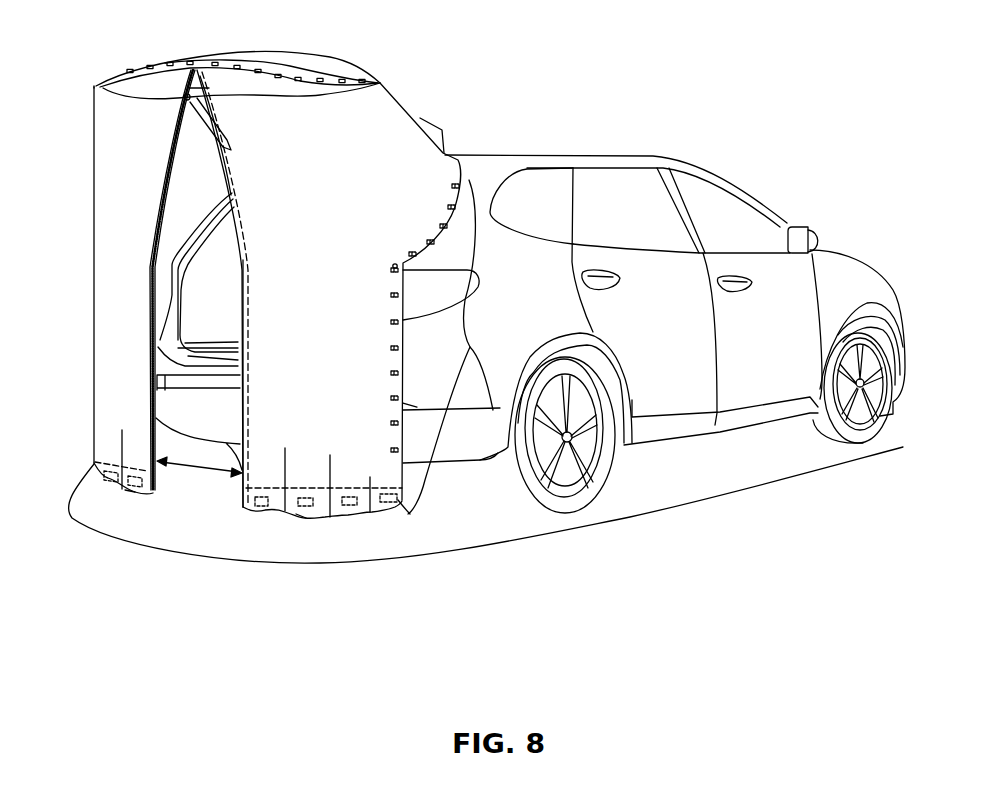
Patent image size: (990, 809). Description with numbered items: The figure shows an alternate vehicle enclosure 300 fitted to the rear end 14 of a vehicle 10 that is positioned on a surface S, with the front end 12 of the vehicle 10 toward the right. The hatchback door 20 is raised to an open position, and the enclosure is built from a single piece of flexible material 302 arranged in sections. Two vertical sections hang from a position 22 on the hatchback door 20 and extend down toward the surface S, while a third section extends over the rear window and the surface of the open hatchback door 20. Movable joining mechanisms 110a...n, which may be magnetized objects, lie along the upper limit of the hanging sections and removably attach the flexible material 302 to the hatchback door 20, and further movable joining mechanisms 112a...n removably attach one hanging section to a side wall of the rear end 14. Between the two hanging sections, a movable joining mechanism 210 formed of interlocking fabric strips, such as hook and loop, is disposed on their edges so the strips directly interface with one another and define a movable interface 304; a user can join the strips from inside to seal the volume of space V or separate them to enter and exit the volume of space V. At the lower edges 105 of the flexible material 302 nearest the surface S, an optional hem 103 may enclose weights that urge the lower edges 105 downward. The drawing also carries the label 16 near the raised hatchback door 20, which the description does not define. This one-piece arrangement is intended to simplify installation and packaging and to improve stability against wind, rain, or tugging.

The vehicle 10 is at (730, 143).
The front end 12 is at (794, 203).
The rear end 14 is at (480, 144).
The tailgate 16 is at (188, 154).
The hatchback door 20 is at (405, 101).
The position on the hatchback door 22 is at (176, 60).
The volume of space V is at (168, 299).
The surface S is at (222, 541).
The hem 103 is at (70, 484).
The lower edges 105 is at (130, 495).
The movable joining mechanisms 110a...n is at (194, 97).
The movable joining mechanisms 112a...n is at (476, 362).
The movable joining mechanism 210 is at (209, 288).
The vehicle enclosure 300 is at (114, 61).
The flexible material 302 is at (244, 331).
The movable interface 304 is at (201, 477).